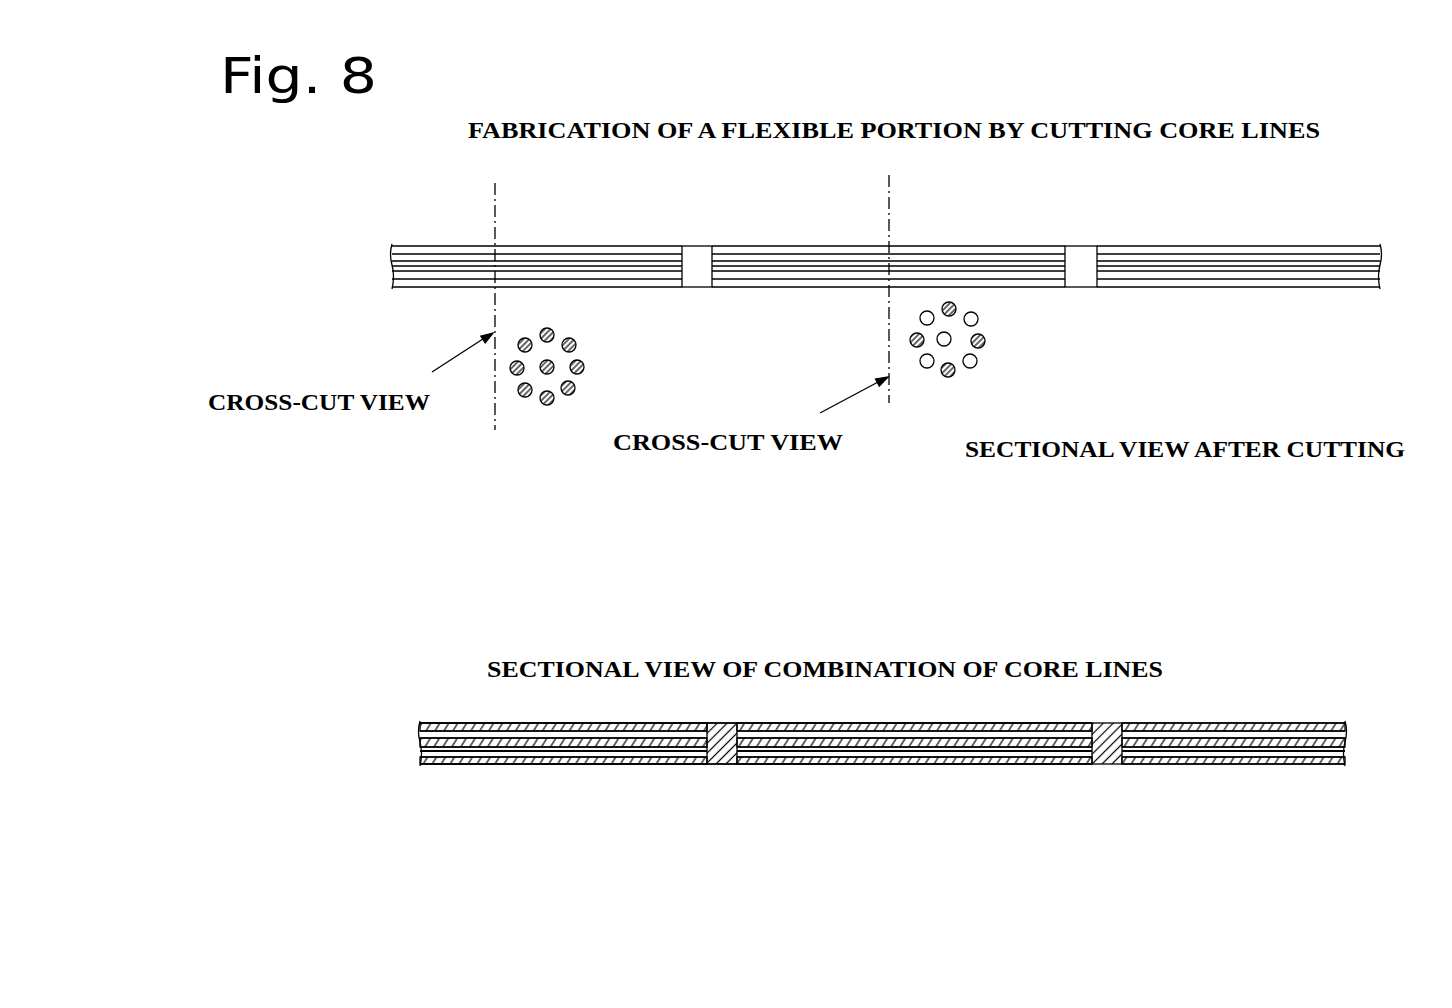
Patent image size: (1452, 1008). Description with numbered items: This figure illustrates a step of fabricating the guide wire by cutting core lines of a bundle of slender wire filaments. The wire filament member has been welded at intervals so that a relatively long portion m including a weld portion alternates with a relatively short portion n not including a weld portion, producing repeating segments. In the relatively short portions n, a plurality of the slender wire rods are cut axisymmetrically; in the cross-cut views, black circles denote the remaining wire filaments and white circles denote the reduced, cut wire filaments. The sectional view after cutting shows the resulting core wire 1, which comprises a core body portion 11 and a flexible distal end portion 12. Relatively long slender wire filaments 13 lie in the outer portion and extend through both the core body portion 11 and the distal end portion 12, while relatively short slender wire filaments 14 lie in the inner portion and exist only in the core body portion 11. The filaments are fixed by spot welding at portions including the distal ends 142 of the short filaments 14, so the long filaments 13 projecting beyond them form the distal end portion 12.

The relatively long portion m is at (452, 288).
The relatively short portion n is at (737, 288).
The core wire 1 is at (793, 883).
The core body portion 11 is at (668, 765).
The distal end portion 12 is at (858, 765).
The relatively long slender wire filaments 13 is at (1178, 765).
The relatively short slender wire filaments 14 is at (1320, 747).
The distal ends 142 is at (723, 755).